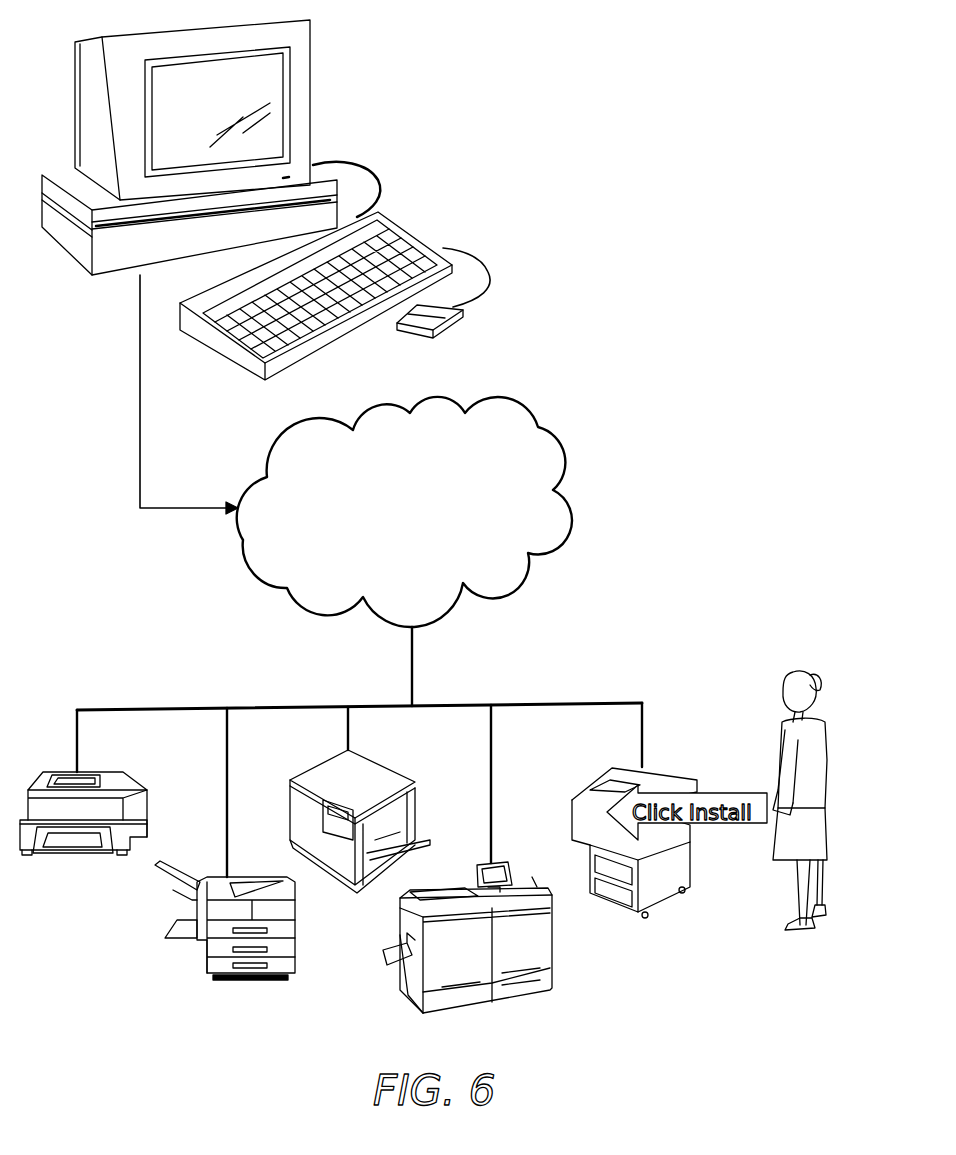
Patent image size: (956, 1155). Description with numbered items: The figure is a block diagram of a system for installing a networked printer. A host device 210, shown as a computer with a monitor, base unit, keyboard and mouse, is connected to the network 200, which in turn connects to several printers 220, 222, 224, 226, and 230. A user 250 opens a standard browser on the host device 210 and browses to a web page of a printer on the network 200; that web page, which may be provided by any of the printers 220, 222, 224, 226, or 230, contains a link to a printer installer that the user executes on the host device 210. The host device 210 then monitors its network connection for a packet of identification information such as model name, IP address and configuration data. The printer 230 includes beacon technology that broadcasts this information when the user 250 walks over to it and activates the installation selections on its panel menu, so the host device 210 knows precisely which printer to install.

The host device 210 is at (326, 85).
The network 200 is at (575, 498).
The printer 220 is at (58, 857).
The printer 222 is at (233, 980).
The printer 224 is at (420, 800).
The printer 226 is at (385, 953).
The printer 230 is at (568, 805).
The user 250 is at (773, 775).